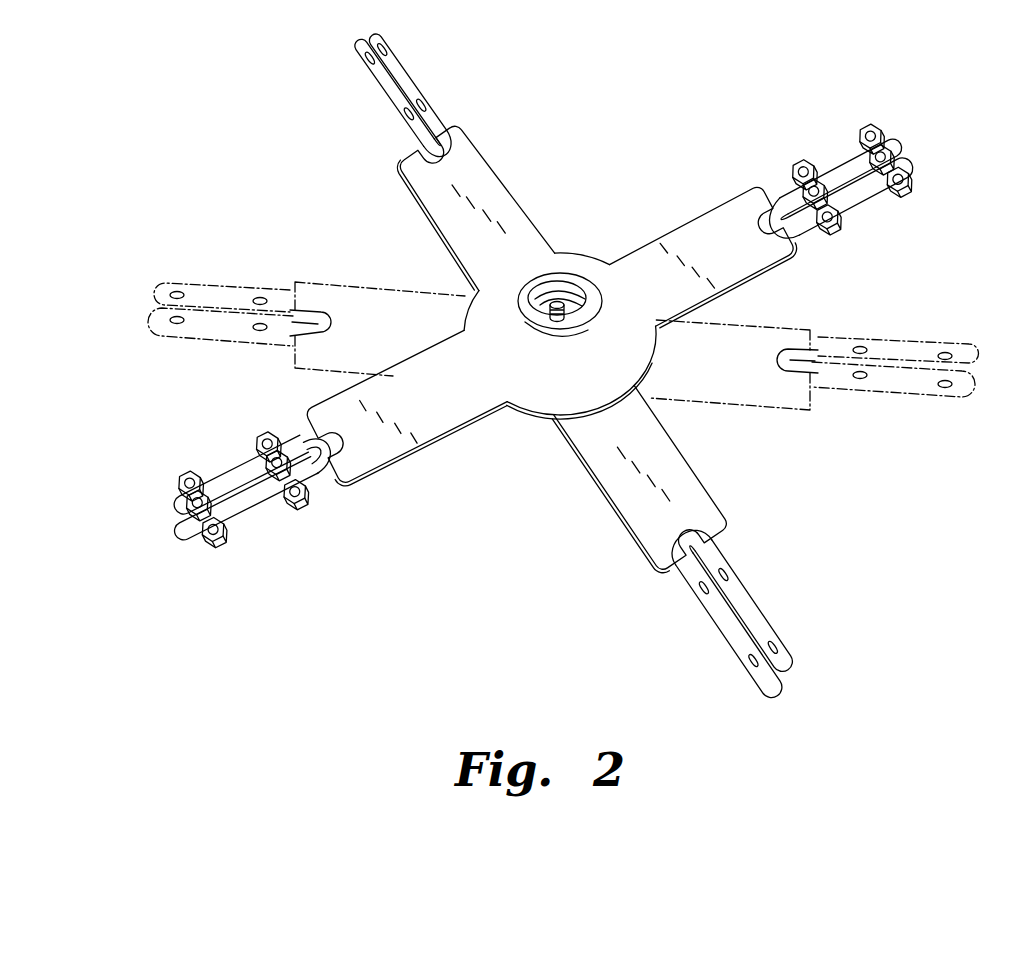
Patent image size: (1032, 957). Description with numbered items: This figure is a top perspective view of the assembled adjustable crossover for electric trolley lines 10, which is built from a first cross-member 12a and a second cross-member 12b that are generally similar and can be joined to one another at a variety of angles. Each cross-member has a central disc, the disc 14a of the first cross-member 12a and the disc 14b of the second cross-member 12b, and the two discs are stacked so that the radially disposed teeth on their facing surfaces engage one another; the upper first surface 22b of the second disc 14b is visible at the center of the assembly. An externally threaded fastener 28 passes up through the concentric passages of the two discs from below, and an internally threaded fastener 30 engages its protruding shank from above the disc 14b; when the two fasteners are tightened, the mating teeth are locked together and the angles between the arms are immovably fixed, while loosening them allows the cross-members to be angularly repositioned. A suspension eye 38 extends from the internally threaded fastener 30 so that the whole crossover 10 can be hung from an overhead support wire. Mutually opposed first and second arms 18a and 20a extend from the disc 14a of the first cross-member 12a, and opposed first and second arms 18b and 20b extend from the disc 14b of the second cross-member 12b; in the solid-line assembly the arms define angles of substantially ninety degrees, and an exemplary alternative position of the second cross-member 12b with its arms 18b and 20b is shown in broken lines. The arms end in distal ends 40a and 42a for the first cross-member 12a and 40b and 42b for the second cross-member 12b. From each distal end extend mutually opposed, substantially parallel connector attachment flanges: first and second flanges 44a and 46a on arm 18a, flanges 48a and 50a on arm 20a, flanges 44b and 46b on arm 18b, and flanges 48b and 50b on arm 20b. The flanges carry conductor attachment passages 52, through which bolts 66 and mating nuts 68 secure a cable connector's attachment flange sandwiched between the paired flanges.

The adjustable crossover for electric trolley lines 10 is at (302, 665).
The first cross-member 12a is at (608, 536).
The second cross-member 12b is at (414, 479).
The central disc of first cross-member 14a is at (546, 420).
The central disc of second cross-member 14b is at (596, 387).
The first arm of first cross-member 18a is at (410, 185).
The first arm of second cross-member 18b is at (310, 262).
The second arm of first cross-member 20a is at (715, 497).
The second arm of second cross-member 20b is at (697, 188).
The first surface of second disc 22b is at (569, 262).
The externally threaded fastener 28 is at (542, 315).
The internally threaded fastener 30 is at (500, 282).
The suspension eye 38 is at (597, 246).
The distal end of first arm of first cross-member 40a is at (462, 130).
The distal end of first arm of second cross-member 40b is at (305, 410).
The distal end of second arm of first cross-member 42a is at (730, 522).
The distal end of second arm of second cross-member 42b is at (810, 250).
The first connector attachment flange 44a is at (395, 48).
The first connector attachment flange 44b is at (200, 275).
The second connector attachment flange 46a is at (378, 85).
The second connector attachment flange 46b is at (200, 335).
The first connector attachment flange 48a is at (790, 610).
The first connector attachment flange 48b is at (830, 150).
The second connector attachment flange 50a is at (712, 610).
The second connector attachment flange 50b is at (873, 207).
The conductor attachment passages 52 is at (372, 65).
The bolts 66 is at (880, 128).
The nuts 68 is at (915, 183).